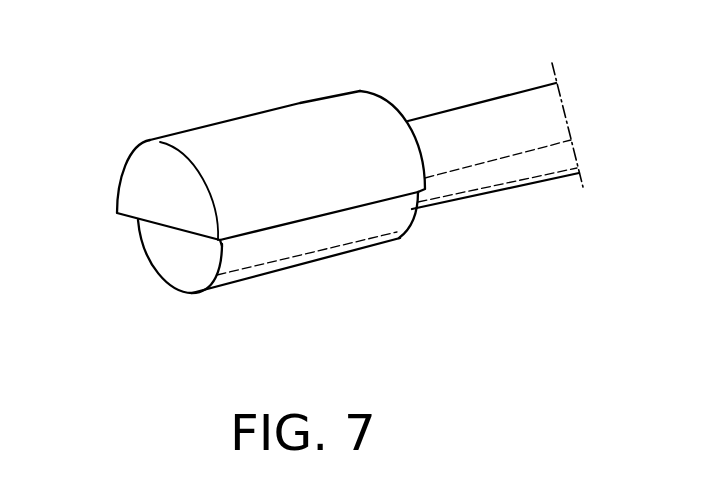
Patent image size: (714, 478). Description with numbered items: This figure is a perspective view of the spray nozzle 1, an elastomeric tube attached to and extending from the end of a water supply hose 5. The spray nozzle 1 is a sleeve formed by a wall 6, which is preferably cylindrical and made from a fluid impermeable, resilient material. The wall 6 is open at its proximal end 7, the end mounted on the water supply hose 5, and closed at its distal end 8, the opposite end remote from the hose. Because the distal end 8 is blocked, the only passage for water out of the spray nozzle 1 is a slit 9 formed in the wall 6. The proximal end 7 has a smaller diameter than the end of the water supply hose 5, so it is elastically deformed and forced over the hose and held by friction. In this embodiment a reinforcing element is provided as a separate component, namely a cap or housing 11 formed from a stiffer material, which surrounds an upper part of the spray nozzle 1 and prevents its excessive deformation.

The spray nozzle 1 is at (133, 78).
The water supply hose 5 is at (466, 103).
The wall 6 is at (380, 227).
The proximal end 7 is at (413, 223).
The distal end 8 is at (177, 263).
The slit 9 is at (270, 240).
The housing 11 is at (270, 113).